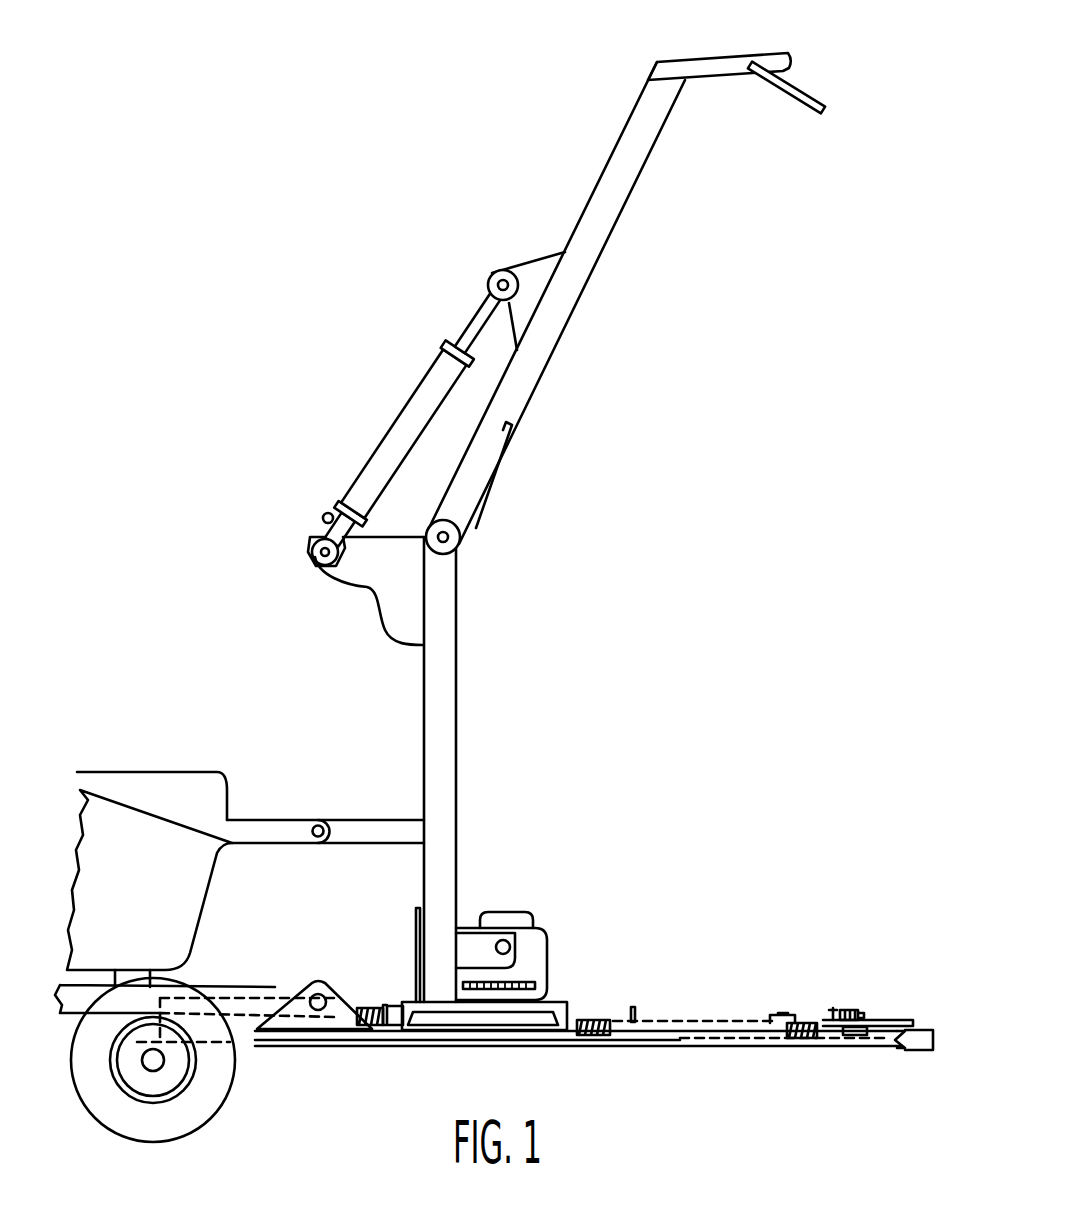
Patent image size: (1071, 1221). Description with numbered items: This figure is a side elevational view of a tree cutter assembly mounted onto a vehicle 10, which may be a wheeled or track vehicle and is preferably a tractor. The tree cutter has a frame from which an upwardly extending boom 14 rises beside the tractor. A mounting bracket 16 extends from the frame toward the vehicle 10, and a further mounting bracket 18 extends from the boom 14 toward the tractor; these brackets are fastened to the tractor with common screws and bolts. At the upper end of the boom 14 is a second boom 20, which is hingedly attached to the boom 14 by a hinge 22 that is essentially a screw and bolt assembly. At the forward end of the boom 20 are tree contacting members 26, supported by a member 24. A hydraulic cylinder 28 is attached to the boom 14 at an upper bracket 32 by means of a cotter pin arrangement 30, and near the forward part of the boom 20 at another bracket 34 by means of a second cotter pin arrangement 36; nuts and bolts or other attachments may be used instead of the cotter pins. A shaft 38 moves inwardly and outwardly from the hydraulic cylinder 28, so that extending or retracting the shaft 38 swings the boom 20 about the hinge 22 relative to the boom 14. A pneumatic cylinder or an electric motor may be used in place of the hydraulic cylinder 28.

The vehicle 10 is at (157, 862).
The boom 14 is at (443, 793).
The mounting bracket 16 is at (333, 1022).
The mounting bracket 18 is at (372, 822).
The boom 20 is at (620, 162).
The hinge 22 is at (456, 548).
The member 24 is at (708, 61).
The tree contacting members 26 is at (801, 103).
The hydraulic cylinder 28 is at (423, 393).
The cotter pin arrangement 30 is at (314, 561).
The upper bracket 32 is at (373, 578).
The bracket 34 is at (537, 272).
The cotter pin arrangement 36 is at (500, 271).
The shaft 38 is at (473, 325).